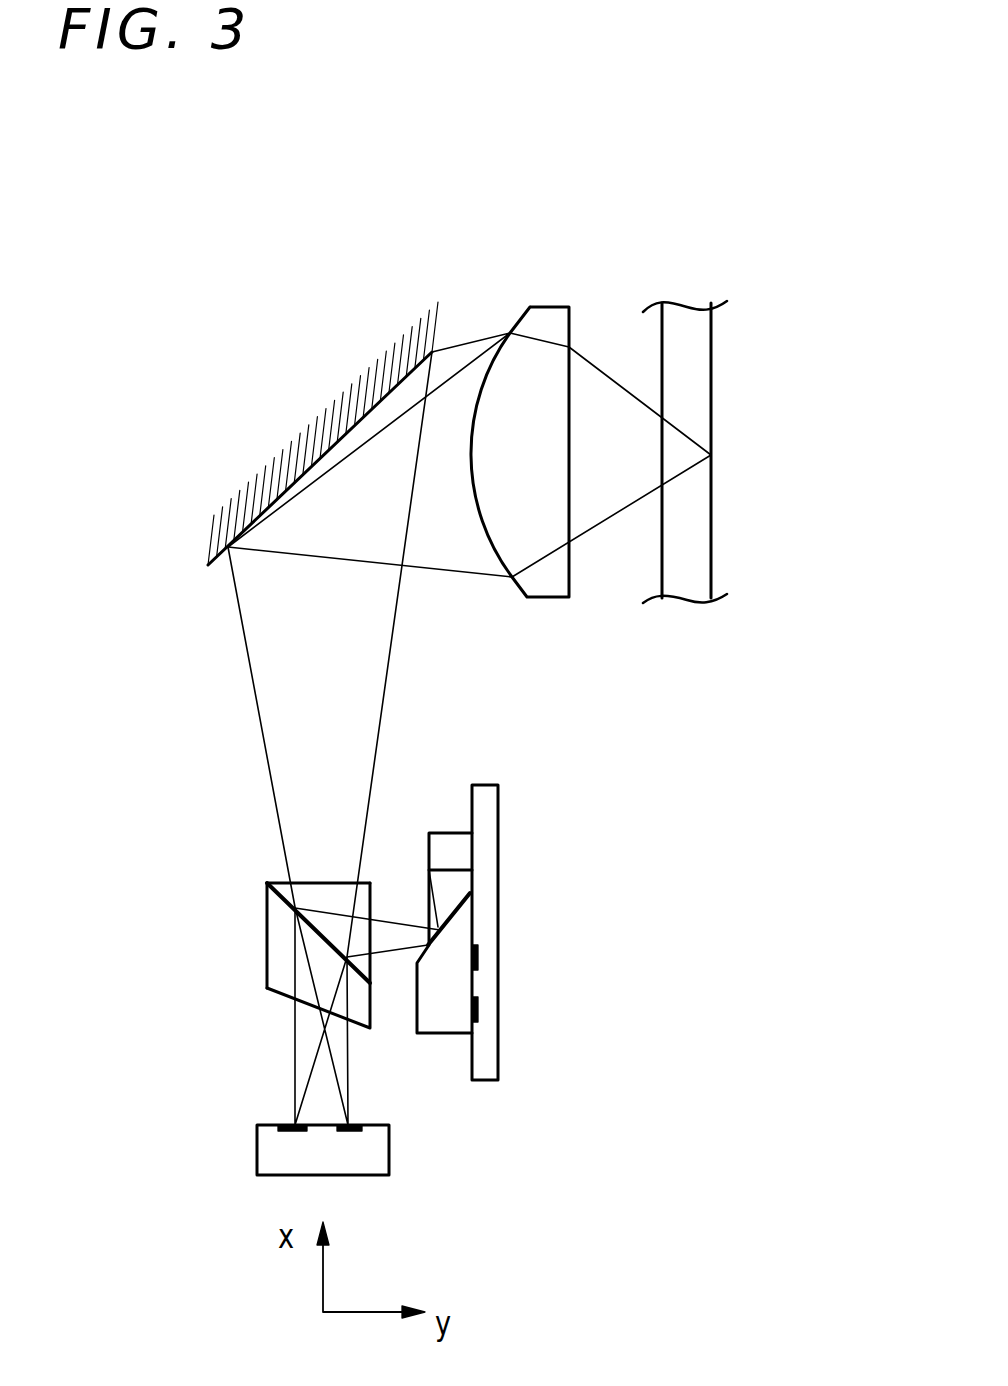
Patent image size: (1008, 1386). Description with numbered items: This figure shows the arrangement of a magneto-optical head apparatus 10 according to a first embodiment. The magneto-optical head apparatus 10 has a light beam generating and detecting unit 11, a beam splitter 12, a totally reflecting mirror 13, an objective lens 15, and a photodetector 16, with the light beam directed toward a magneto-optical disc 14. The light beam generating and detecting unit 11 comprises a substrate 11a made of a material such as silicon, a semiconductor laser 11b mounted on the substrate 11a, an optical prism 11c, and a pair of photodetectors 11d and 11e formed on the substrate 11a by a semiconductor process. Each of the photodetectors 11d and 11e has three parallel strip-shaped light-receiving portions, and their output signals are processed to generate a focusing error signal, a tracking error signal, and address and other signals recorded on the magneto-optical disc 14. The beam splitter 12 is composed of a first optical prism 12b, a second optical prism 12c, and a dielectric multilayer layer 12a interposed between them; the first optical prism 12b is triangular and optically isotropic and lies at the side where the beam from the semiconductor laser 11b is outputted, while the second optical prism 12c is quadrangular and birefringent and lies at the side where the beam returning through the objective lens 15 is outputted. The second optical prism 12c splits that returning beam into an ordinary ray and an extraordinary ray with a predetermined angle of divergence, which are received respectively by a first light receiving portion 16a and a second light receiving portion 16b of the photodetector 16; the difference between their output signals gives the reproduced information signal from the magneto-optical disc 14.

The magneto-optical head apparatus 10 is at (727, 218).
The light beam generating and detecting unit 11 is at (544, 923).
The substrate 11a is at (490, 1062).
The semiconductor laser 11b is at (460, 848).
The optical prism 11c is at (427, 1025).
The photodetector 11d is at (478, 955).
The photodetector 11e is at (478, 1005).
The beam splitter 12 is at (271, 920).
The dielectric multilayer layer 12a is at (195, 907).
The first optical prism 12b is at (333, 893).
The second optical prism 12c is at (275, 975).
The totally reflecting mirror 13 is at (335, 435).
The magneto-optical disc 14 is at (688, 578).
The objective lens 15 is at (550, 305).
The photodetector 16 is at (375, 1182).
The first light receiving portion 16a is at (353, 1133).
The second light receiving portion 16b is at (295, 1133).